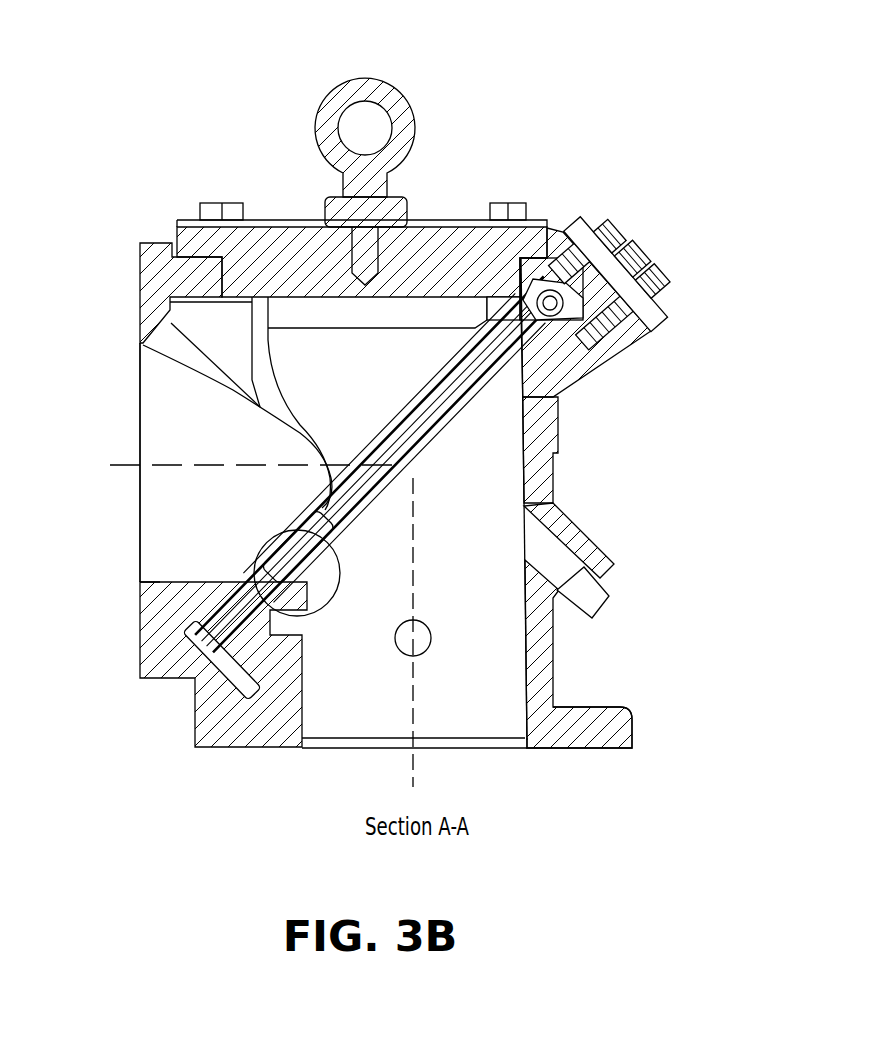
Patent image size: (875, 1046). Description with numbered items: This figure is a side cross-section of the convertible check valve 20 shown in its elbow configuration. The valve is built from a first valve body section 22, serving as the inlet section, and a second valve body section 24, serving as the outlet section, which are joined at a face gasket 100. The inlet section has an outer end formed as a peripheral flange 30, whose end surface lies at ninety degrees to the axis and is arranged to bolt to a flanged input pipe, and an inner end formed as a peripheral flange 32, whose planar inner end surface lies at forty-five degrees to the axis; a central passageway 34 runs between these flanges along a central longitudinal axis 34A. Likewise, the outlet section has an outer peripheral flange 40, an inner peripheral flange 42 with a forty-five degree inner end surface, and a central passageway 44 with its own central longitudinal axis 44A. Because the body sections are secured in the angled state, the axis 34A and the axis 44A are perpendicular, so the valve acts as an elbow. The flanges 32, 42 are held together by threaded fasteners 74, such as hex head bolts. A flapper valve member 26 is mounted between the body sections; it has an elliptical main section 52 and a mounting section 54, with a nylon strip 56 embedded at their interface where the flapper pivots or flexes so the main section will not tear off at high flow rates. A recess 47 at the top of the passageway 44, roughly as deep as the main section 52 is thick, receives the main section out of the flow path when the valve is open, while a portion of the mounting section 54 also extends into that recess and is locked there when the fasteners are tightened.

The convertible check valve 20 is at (225, 113).
The first valve body section 22 is at (254, 759).
The second valve body section 24 is at (414, 212).
The flapper valve member 26 is at (362, 448).
The peripheral flange 30 is at (620, 749).
The peripheral flange 32 is at (660, 271).
The central passageway 34 is at (484, 746).
The central longitudinal axis 34A is at (408, 773).
The peripheral flange 40 is at (141, 242).
The peripheral flange 42 is at (609, 220).
The central passageway 44 is at (157, 520).
The central longitudinal axis 44A is at (127, 464).
The recess 47 is at (336, 304).
The main section 52 is at (421, 444).
The mounting section 54 is at (553, 295).
The nylon strip 56 is at (520, 330).
The threaded fasteners 74 is at (658, 324).
The face gasket 100 is at (632, 240).